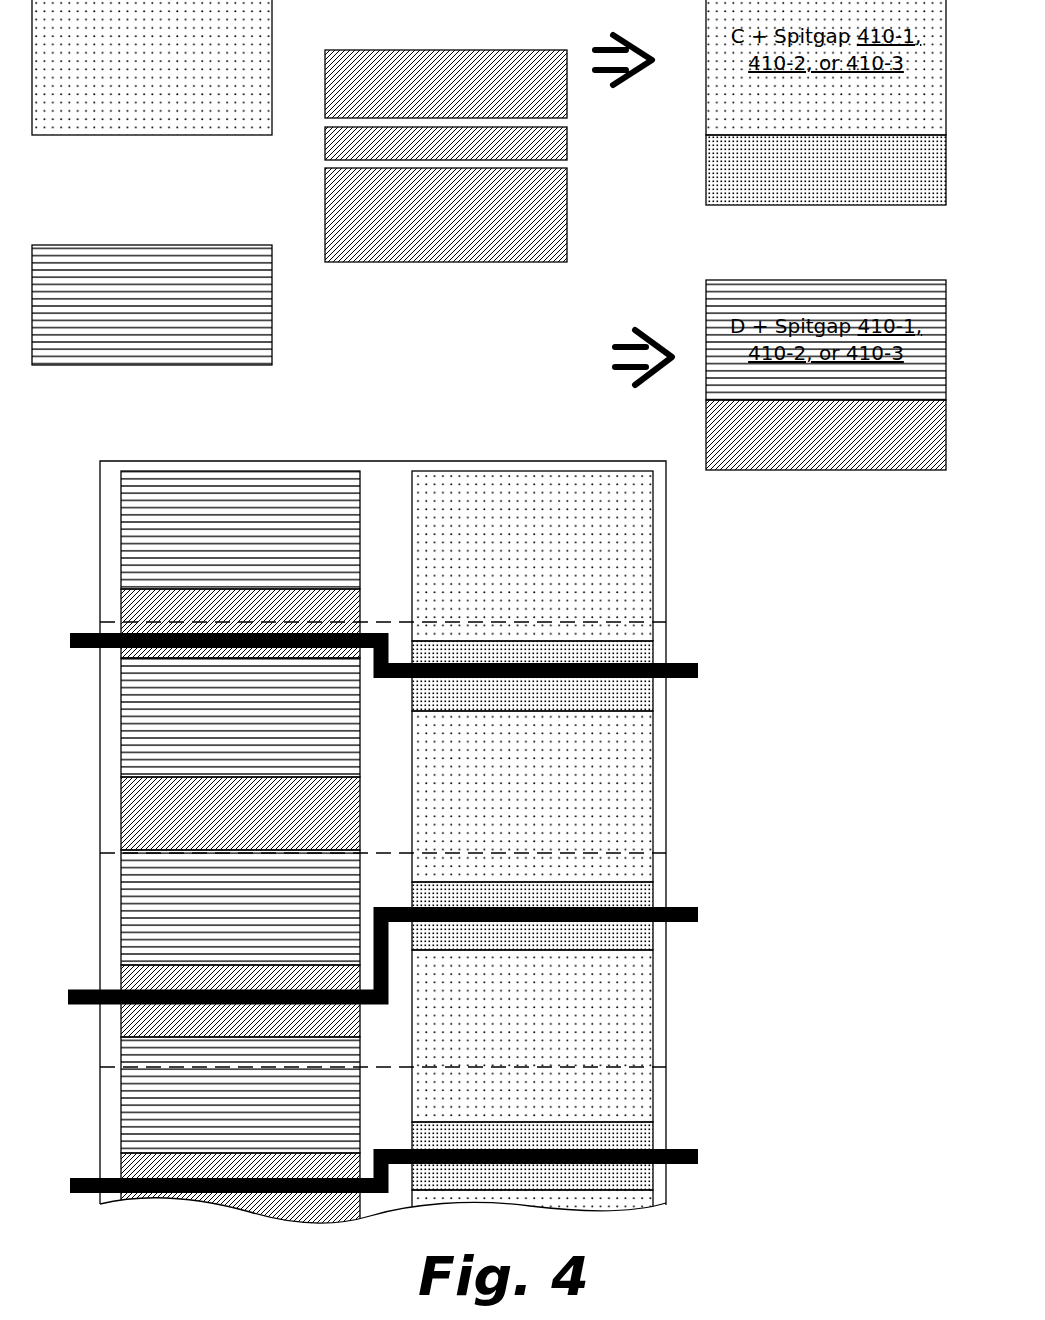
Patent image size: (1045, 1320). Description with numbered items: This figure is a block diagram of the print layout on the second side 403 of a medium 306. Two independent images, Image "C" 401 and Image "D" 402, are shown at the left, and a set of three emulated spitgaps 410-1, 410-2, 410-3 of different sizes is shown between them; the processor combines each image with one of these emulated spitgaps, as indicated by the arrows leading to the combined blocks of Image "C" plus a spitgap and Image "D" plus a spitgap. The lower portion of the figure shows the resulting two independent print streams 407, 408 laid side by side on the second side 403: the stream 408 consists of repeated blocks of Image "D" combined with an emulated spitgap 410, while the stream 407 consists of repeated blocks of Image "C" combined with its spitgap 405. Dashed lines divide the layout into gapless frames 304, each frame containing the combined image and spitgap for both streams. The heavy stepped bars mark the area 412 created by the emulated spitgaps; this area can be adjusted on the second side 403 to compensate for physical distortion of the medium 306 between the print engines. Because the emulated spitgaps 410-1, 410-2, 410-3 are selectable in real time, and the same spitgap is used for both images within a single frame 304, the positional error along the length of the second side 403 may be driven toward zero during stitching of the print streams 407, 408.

The Image "C" 401 is at (152, 67).
The Image "D" 402 is at (152, 305).
The emulated spitgap 410-1 is at (446, 84).
The emulated spitgap 410-2 is at (446, 143).
The emulated spitgap 410-3 is at (446, 215).
The emulated spitgap 410 is at (240, 812).
The spitgap combined with image C 405 is at (532, 855).
The second side 403 is at (386, 482).
The print stream 407 is at (532, 855).
The print stream 408 is at (240, 857).
The gapless frame 304 is at (532, 855).
The area 412 is at (720, 673).
The medium 306 is at (694, 1224).